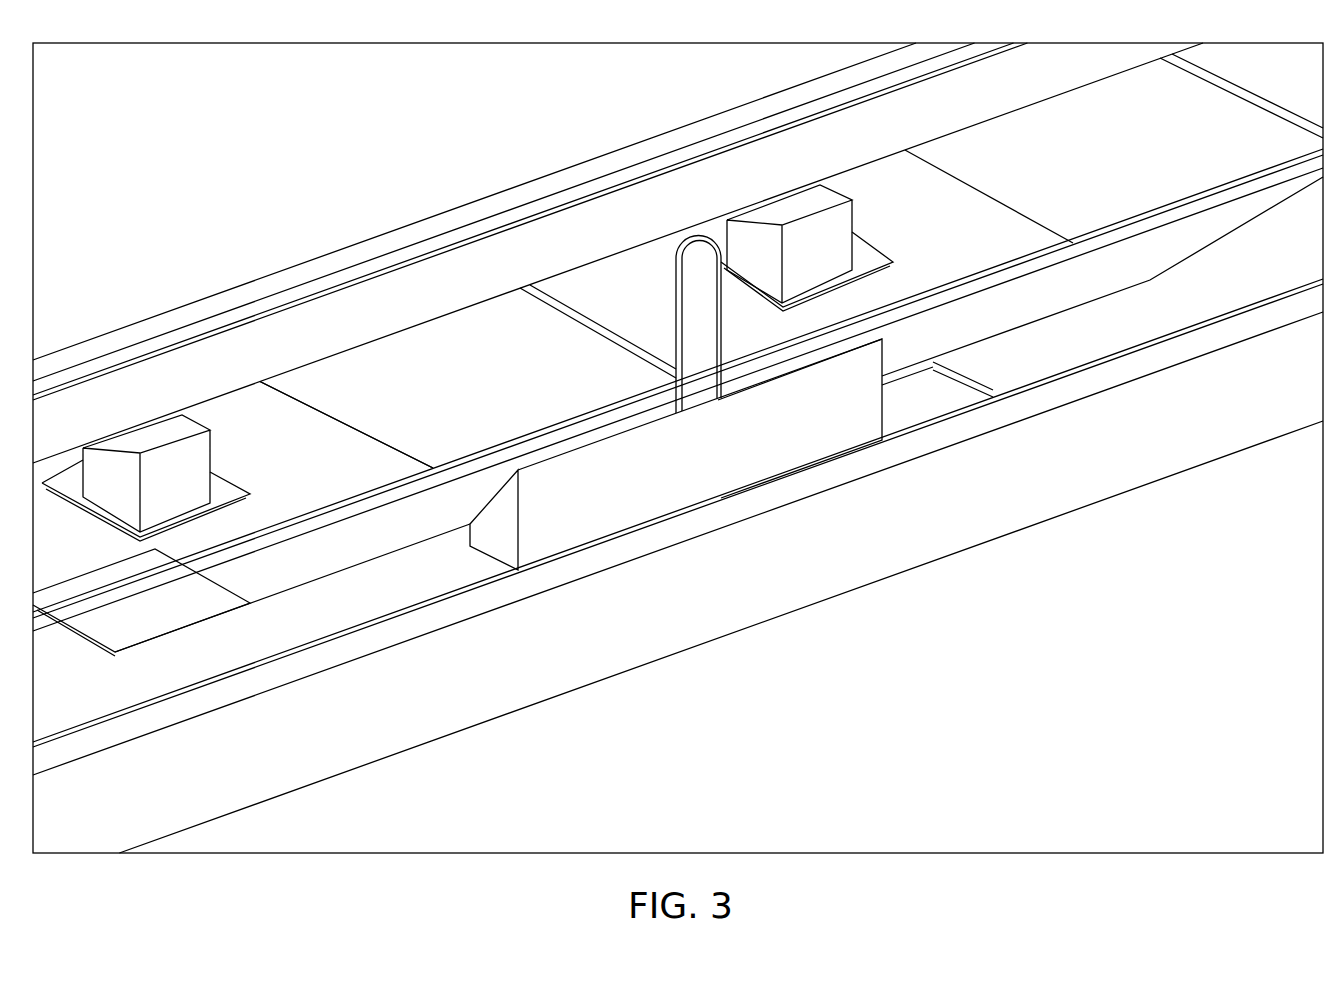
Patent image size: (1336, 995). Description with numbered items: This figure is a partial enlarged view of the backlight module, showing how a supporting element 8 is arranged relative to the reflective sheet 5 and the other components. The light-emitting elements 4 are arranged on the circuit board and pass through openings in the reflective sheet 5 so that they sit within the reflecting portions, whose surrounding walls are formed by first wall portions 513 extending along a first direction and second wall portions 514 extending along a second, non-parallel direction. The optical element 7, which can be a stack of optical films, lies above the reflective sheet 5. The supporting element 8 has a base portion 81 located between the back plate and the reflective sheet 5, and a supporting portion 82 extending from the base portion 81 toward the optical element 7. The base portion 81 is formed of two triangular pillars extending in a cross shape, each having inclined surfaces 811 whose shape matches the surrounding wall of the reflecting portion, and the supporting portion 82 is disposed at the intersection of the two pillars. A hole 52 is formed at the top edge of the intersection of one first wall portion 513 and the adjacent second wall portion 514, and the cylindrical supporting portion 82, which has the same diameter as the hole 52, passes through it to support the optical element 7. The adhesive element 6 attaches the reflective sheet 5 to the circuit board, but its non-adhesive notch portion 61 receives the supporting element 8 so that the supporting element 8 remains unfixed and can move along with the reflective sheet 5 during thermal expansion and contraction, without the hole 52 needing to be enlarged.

The light-emitting element 4 is at (813, 228).
The reflective sheet 5 is at (270, 603).
The adhesive element 6 is at (1115, 343).
The optical element 7 is at (430, 112).
The supporting element 8 is at (600, 530).
The hole 52 is at (687, 393).
The notch portion 61 is at (973, 397).
The base portion 81 is at (845, 427).
The supporting portion 82 is at (690, 237).
The first wall portion 513 is at (507, 337).
The second wall portion 514 is at (320, 553).
The inclined surface 811 is at (480, 497).